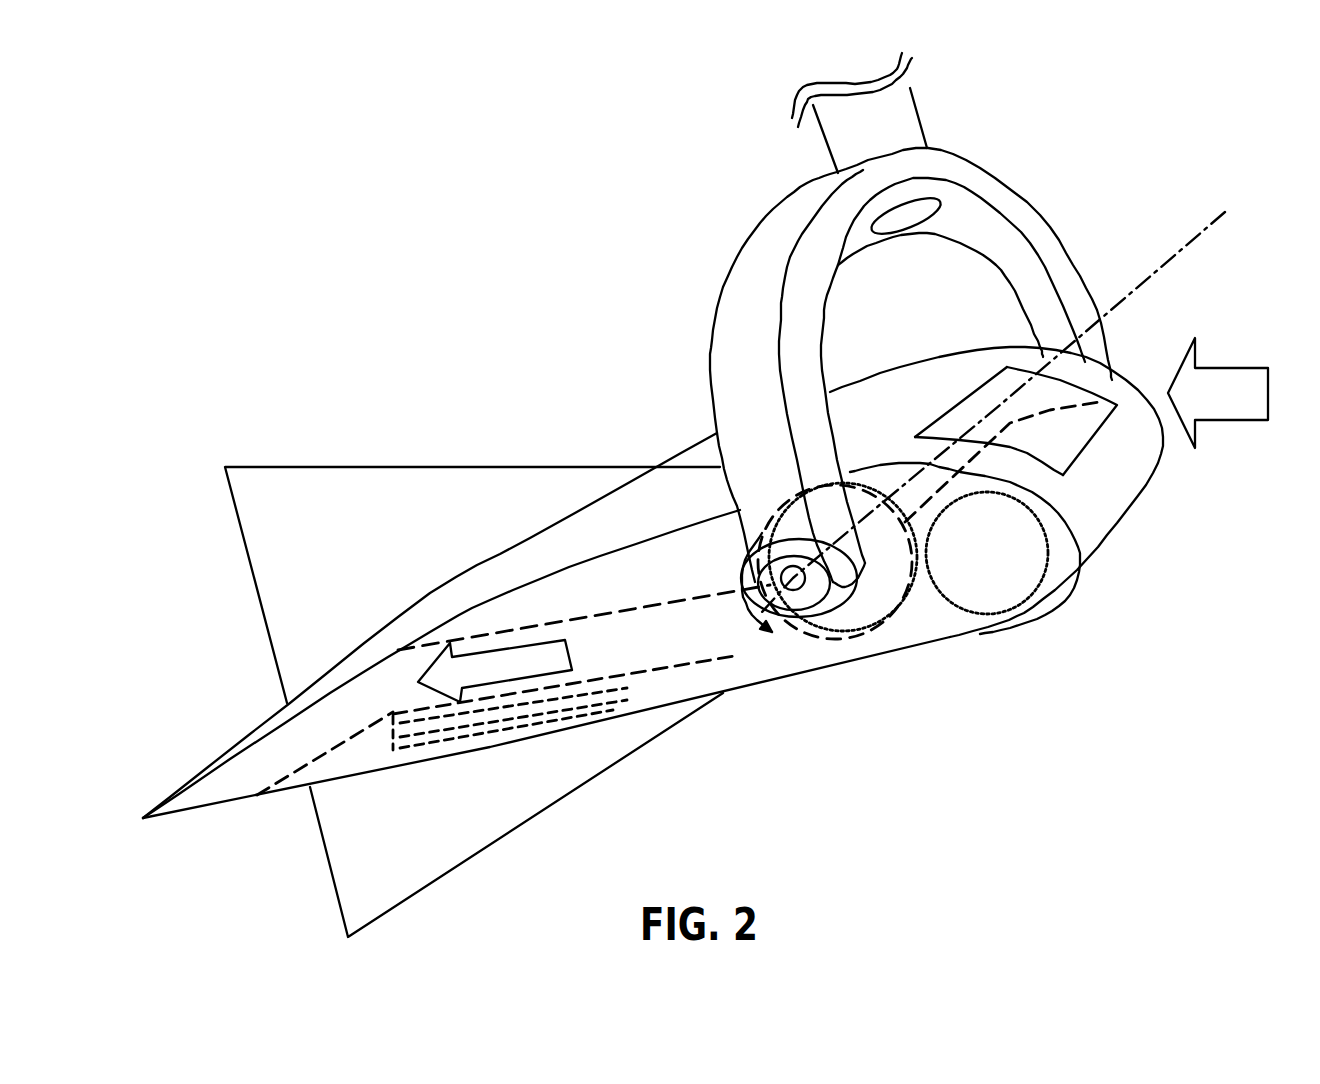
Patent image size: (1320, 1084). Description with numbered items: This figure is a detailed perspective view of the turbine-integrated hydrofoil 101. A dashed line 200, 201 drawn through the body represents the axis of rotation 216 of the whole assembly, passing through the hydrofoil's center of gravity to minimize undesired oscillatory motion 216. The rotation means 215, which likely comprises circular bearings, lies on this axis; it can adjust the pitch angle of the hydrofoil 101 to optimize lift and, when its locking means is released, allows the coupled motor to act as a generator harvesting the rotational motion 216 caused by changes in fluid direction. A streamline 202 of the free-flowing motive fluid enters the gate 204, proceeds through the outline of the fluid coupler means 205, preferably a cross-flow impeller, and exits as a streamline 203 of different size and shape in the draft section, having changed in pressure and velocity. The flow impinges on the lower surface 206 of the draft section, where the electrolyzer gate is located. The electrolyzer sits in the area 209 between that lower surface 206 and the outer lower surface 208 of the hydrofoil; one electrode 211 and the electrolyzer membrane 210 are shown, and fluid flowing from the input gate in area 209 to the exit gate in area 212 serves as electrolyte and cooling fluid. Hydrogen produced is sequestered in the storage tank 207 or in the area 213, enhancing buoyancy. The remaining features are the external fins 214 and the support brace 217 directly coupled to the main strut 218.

The turbine-integrated hydrofoil 101 is at (291, 247).
The dashed line (axis of rotation) 200 is at (1010, 403).
The dashed line (axis of rotation) 201 is at (752, 620).
The streamline of free-flowing motive fluid 202 is at (1237, 404).
The streamline in the draft section 203 is at (475, 688).
The gate 204 is at (1093, 440).
The fluid coupler means 205 is at (901, 608).
The lower surface of the draft section 206 is at (737, 659).
The storage tank 207 is at (1012, 612).
The outer lower surface 208 is at (746, 686).
The area for electrolyzer 209 is at (727, 689).
The electrolyzer membrane 210 is at (627, 688).
The electrode 211 is at (612, 712).
The area of exit gate 212 is at (377, 768).
The area for hydrogen storage 213 is at (749, 526).
The external fins 214 is at (349, 545).
The rotation means 215 is at (803, 590).
The rotational motion 216 is at (787, 632).
The support brace 217 is at (826, 328).
The main strut 218 is at (918, 103).